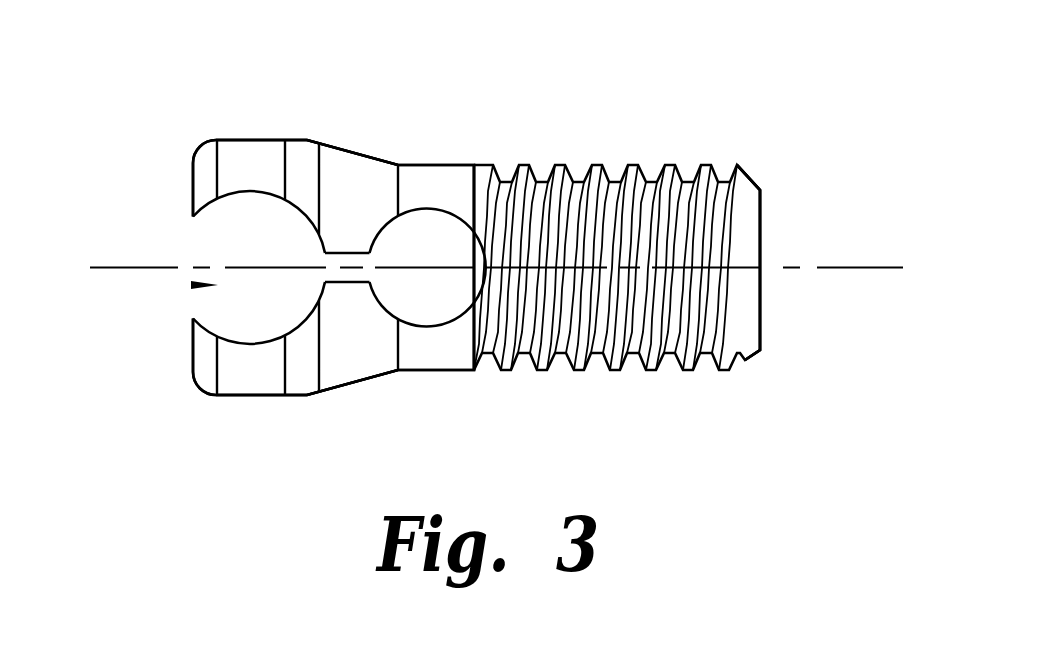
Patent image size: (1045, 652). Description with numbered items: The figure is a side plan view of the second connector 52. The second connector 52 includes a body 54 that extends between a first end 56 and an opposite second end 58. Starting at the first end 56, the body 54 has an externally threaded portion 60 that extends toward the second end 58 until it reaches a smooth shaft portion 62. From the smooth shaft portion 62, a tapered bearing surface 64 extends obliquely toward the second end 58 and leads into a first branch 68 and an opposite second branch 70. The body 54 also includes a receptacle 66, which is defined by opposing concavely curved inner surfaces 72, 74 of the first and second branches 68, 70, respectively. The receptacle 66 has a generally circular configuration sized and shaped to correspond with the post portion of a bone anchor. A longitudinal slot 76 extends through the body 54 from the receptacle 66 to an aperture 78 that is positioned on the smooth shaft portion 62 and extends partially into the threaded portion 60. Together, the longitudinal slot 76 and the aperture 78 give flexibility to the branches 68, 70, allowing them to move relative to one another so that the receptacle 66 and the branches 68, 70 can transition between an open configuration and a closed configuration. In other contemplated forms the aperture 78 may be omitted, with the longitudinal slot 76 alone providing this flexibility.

The second connector 52 is at (772, 80).
The body 54 is at (591, 372).
The first end 56 is at (760, 237).
The second end 58 is at (190, 197).
The externally threaded portion 60 is at (561, 164).
The smooth shaft portion 62 is at (438, 164).
The tapered bearing surface 64 is at (362, 157).
The receptacle 66 is at (195, 285).
The first branch 68 is at (240, 137).
The second branch 70 is at (255, 397).
The concavely curved inner surface 72 is at (240, 192).
The concavely curved inner surface 74 is at (250, 320).
The longitudinal slot 76 is at (363, 266).
The aperture 78 is at (452, 287).